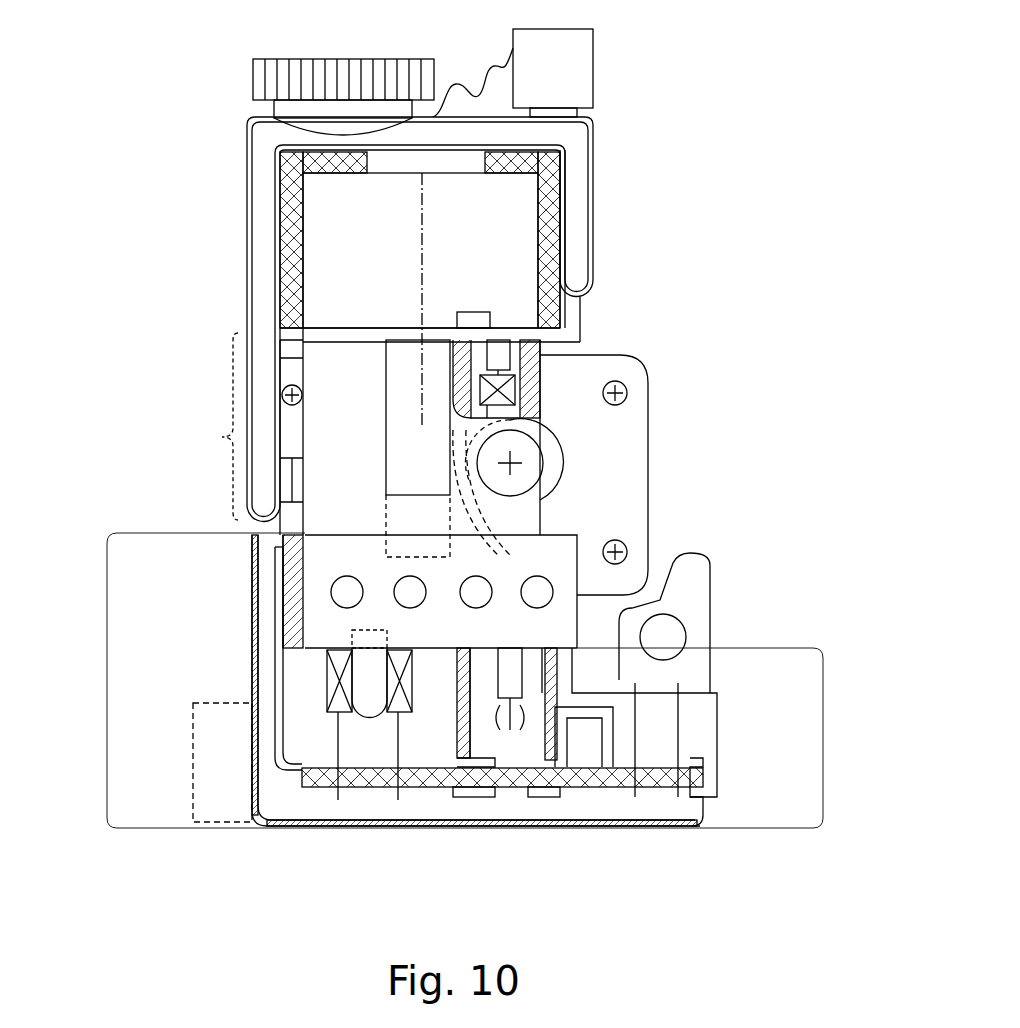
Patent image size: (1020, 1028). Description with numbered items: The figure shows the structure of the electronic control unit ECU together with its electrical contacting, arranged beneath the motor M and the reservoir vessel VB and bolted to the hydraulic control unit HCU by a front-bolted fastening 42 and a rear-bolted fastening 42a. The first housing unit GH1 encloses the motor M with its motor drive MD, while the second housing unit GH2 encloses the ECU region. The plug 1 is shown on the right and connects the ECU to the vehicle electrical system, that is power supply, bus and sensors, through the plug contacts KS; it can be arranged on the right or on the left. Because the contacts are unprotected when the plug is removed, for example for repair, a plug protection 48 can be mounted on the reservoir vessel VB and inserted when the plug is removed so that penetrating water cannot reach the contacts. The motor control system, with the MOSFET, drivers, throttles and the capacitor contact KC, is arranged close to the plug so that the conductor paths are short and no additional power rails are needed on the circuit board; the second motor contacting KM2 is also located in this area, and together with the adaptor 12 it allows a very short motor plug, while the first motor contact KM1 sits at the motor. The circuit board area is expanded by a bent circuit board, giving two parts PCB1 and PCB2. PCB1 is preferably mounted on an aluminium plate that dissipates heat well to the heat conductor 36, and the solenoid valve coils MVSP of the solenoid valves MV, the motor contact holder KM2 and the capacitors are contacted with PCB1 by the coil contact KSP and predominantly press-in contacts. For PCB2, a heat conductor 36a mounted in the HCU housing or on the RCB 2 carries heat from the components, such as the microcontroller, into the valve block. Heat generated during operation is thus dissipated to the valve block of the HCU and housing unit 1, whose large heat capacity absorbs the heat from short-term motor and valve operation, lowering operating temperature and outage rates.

The plug protection 48 is at (572, 68).
The reservoir vessel VB is at (260, 236).
The motor M is at (522, 207).
The motor drive MD is at (507, 310).
The rear-bolted fastening 42a is at (290, 388).
The first housing unit GH1 is at (199, 426).
The motor contact 1 KM1 is at (513, 382).
The electrical connection element to the motor 12 is at (483, 505).
The front-bolted fastening 42 is at (627, 392).
The RCB 2 is at (668, 634).
The hydraulic control unit HCU is at (250, 623).
The heat conductor 36a is at (280, 577).
The solenoid valve MV is at (352, 690).
The solenoid valve coil MVSP is at (398, 690).
The heat conductor 36 is at (462, 760).
The motor contact 2 with support KM2 is at (520, 790).
The element MOSFET is at (463, 797).
The contact with capacitor KC is at (593, 778).
The first printed circuit board PCB1 is at (407, 790).
The second printed circuit board PCB2 is at (268, 775).
The contact with coil KSP is at (338, 800).
The plug contact KS is at (682, 793).
The electronic control unit ECU is at (826, 648).
The second housing unit GH2 is at (107, 533).
The plug / housing unit 1 is at (208, 800).